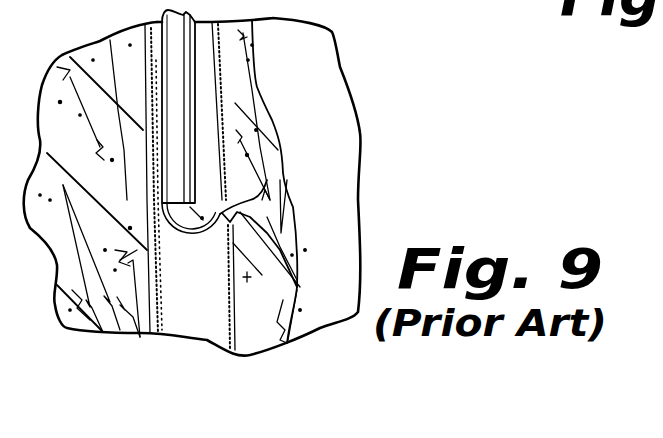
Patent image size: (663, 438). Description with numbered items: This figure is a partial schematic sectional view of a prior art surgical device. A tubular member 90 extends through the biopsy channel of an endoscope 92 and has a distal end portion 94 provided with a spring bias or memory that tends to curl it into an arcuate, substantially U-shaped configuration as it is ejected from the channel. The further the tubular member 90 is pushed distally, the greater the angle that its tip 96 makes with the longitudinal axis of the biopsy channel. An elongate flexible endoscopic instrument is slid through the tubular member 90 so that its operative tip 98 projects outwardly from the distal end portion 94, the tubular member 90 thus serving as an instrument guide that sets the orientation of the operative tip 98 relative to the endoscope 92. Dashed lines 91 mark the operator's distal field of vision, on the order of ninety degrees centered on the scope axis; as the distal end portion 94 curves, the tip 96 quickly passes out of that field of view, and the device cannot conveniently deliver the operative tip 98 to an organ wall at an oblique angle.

The tubular member 90 is at (157, 333).
The dashed lines 91 is at (125, 333).
The endoscope 92 is at (177, 92).
The distal end portion 94 is at (201, 350).
The tip 96 is at (273, 237).
The operative tip 98 is at (230, 203).